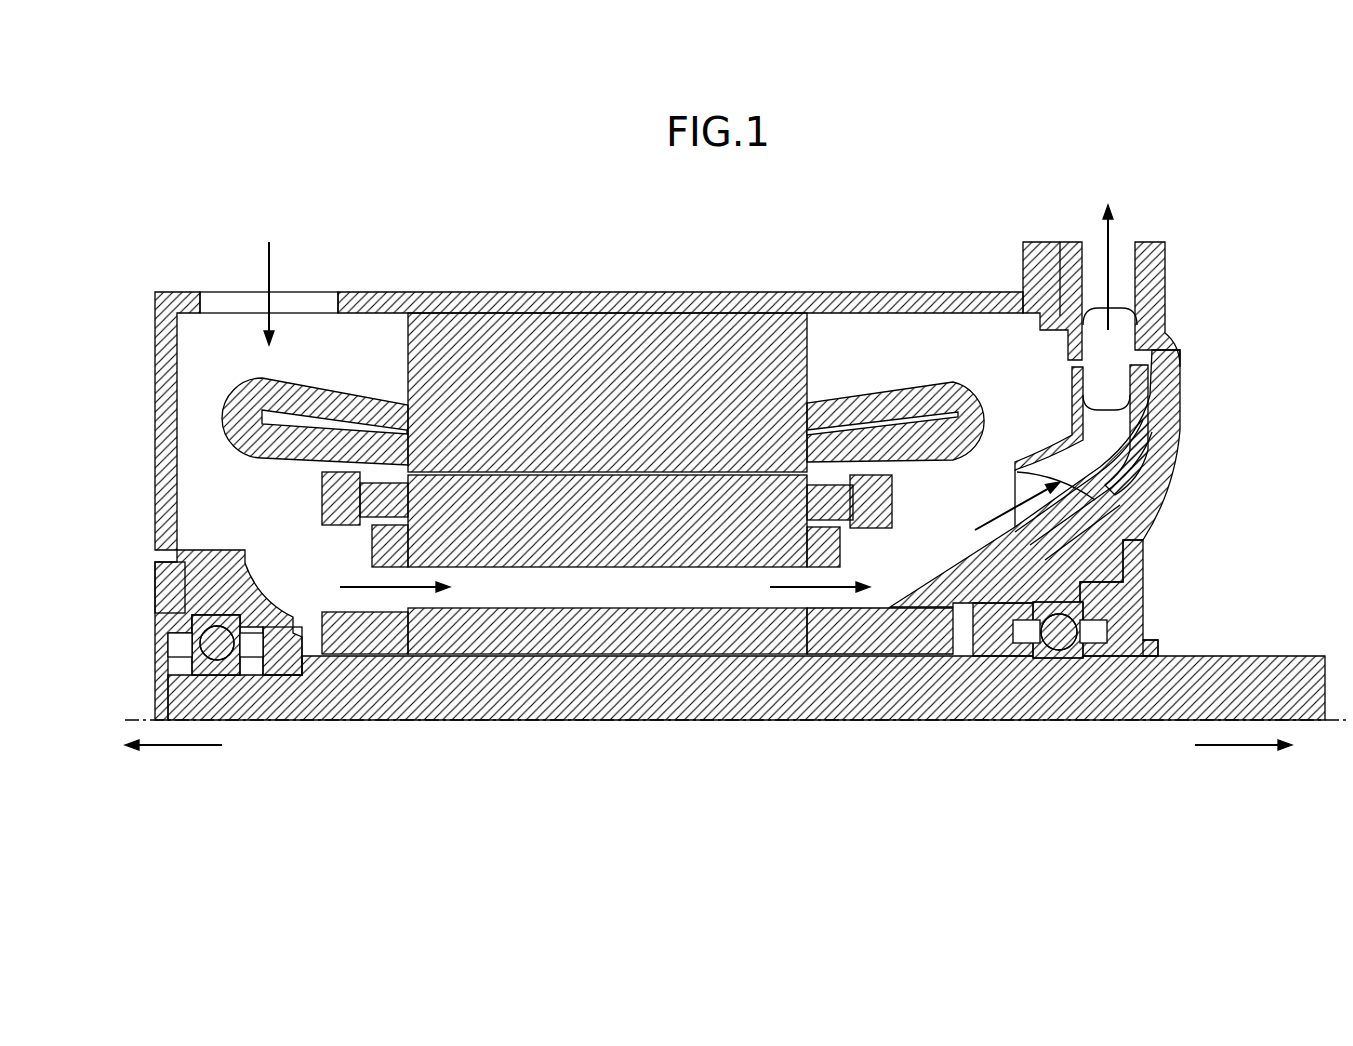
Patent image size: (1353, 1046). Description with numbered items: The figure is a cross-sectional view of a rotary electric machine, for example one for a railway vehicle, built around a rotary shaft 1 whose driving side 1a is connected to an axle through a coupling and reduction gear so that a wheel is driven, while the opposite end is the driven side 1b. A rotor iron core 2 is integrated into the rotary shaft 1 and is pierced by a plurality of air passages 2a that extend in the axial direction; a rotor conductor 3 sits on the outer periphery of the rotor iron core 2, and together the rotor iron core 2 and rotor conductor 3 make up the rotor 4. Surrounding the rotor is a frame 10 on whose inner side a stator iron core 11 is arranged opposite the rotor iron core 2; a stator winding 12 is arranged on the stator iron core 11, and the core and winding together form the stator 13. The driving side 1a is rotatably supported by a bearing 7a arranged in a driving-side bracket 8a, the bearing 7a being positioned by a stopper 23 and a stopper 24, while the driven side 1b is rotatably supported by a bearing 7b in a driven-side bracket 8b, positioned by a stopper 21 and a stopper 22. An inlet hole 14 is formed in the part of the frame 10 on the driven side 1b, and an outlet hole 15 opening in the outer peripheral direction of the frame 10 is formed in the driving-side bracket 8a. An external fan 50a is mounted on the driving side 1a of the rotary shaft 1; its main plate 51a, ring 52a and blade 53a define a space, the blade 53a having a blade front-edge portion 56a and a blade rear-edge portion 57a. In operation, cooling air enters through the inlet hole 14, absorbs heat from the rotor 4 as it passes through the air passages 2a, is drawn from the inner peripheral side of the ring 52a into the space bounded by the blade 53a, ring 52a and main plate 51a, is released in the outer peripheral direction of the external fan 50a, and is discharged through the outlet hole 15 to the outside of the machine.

The rotary shaft 1 is at (622, 705).
The driving side 1a is at (1243, 760).
The driven side 1b is at (173, 760).
The rotor iron core 2 is at (720, 490).
The air passages 2a is at (625, 585).
The rotor conductor 3 is at (830, 480).
The rotor 4 is at (913, 497).
The bearing 7a is at (1142, 597).
The bearing 7b is at (185, 622).
The driving-side bracket 8a is at (1172, 420).
The driven-side bracket 8b is at (198, 588).
The frame 10 is at (553, 306).
The stator iron core 11 is at (462, 340).
The stator winding 12 is at (345, 395).
The stator 13 is at (1006, 383).
The inlet hole 14 is at (236, 292).
The outlet hole 15 is at (1128, 232).
The stopper 21 is at (195, 640).
The stopper 22 is at (283, 667).
The stopper 23 is at (1012, 658).
The stopper 24 is at (1160, 650).
The external fan 50a is at (907, 630).
The main plate 51a is at (1123, 467).
The ring 52a is at (1083, 380).
The blade 53a is at (1108, 438).
The blade front-edge portion 56a is at (1153, 533).
The blade rear-edge portion 57a is at (1108, 403).